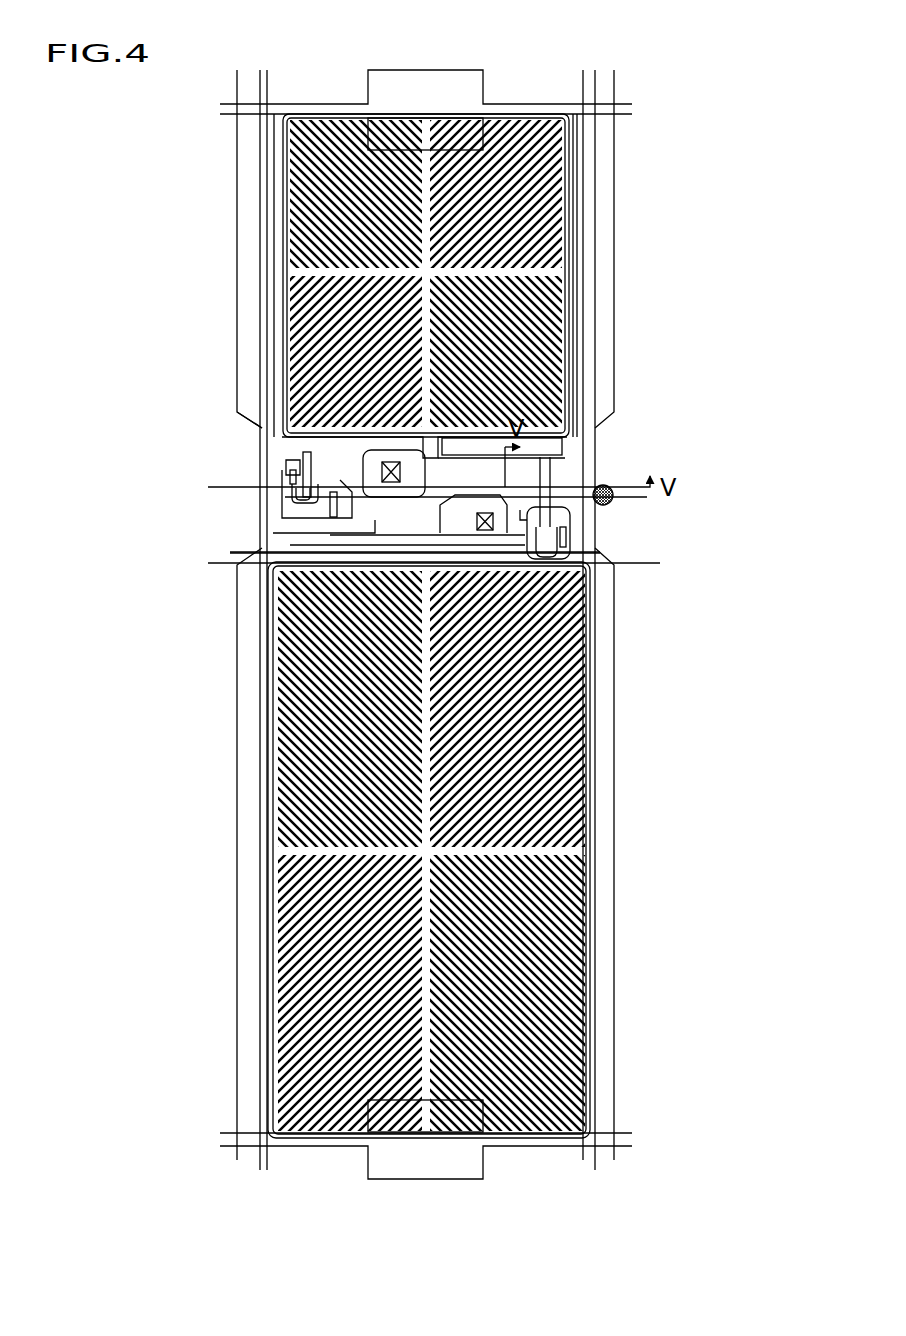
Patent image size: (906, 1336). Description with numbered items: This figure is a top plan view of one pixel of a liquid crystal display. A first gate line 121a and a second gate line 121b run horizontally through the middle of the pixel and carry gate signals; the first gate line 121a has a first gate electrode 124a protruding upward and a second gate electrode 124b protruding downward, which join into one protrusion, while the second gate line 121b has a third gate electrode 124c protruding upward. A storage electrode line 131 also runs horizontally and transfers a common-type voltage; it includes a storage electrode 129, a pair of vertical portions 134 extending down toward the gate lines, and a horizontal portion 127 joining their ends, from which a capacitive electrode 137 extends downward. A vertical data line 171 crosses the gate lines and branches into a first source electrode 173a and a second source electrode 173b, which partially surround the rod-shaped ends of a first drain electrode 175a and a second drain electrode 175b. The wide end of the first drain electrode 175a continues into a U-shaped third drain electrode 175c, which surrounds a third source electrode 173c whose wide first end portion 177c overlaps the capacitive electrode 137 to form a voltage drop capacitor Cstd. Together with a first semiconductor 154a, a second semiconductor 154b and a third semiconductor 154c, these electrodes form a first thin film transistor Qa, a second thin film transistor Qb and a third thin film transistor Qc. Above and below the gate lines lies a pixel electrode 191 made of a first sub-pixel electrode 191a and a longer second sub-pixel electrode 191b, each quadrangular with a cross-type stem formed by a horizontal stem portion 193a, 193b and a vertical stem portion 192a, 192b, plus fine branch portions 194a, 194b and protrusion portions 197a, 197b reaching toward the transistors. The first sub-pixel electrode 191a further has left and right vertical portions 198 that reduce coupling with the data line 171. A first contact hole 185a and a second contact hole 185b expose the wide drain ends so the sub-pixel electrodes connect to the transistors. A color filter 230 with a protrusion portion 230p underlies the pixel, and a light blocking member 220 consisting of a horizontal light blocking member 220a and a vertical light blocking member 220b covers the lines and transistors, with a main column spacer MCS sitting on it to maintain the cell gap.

The storage electrode line 131 is at (524, 115).
The storage electrode 129 is at (483, 131).
The data line 171 is at (267, 152).
The vertical light blocking member 220b is at (614, 157).
The color filter 230 is at (275, 188).
The fine branch portions 194a is at (330, 205).
The vertical portions 134 is at (574, 233).
The vertical stem portion 192a is at (422, 239).
The horizontal stem portion 193a is at (522, 270).
The horizontal light blocking member 220a is at (345, 437).
The left and right vertical portions 198 is at (586, 300).
The first gate electrode 124a is at (348, 452).
The voltage drop capacitor Cstd is at (576, 397).
The first thin film transistor Qa is at (274, 511).
The first source electrode 173a is at (303, 455).
The wide first end portion 177c is at (553, 455).
The horizontal portion 127 is at (262, 428).
The capacitive electrode 137 is at (572, 447).
The second drain electrode 175b is at (286, 462).
The main column spacer MCS is at (612, 487).
The second thin film transistor Qb is at (384, 566).
The first gate line 121a is at (652, 497).
The second semiconductor 154b is at (292, 497).
The protrusion portion 230p is at (298, 514).
The third source electrode 173c is at (570, 518).
The third gate electrode 124c is at (572, 533).
The second source electrode 173b is at (300, 545).
The second gate line 121b is at (662, 563).
The second gate electrode 124b is at (300, 560).
The third thin film transistor Qc is at (638, 593).
The third drain electrode 175c is at (566, 547).
The first drain electrode 175a is at (333, 520).
The first semiconductor 154a is at (352, 520).
The second contact hole 185b is at (497, 538).
The third semiconductor 154c is at (552, 560).
The first contact hole 185a is at (385, 500).
The protrusion portion 197b is at (522, 545).
The protrusion portion 197a is at (395, 548).
The fine branch portions 194b is at (295, 770).
The vertical stem portion 192b is at (428, 778).
The horizontal stem portion 193b is at (552, 851).
The first sub-pixel electrode 191a is at (131, 838).
The second sub-pixel electrode 191b is at (131, 985).
The light blocking member 220 is at (710, 959).
The pixel electrode 191 is at (710, 1045).